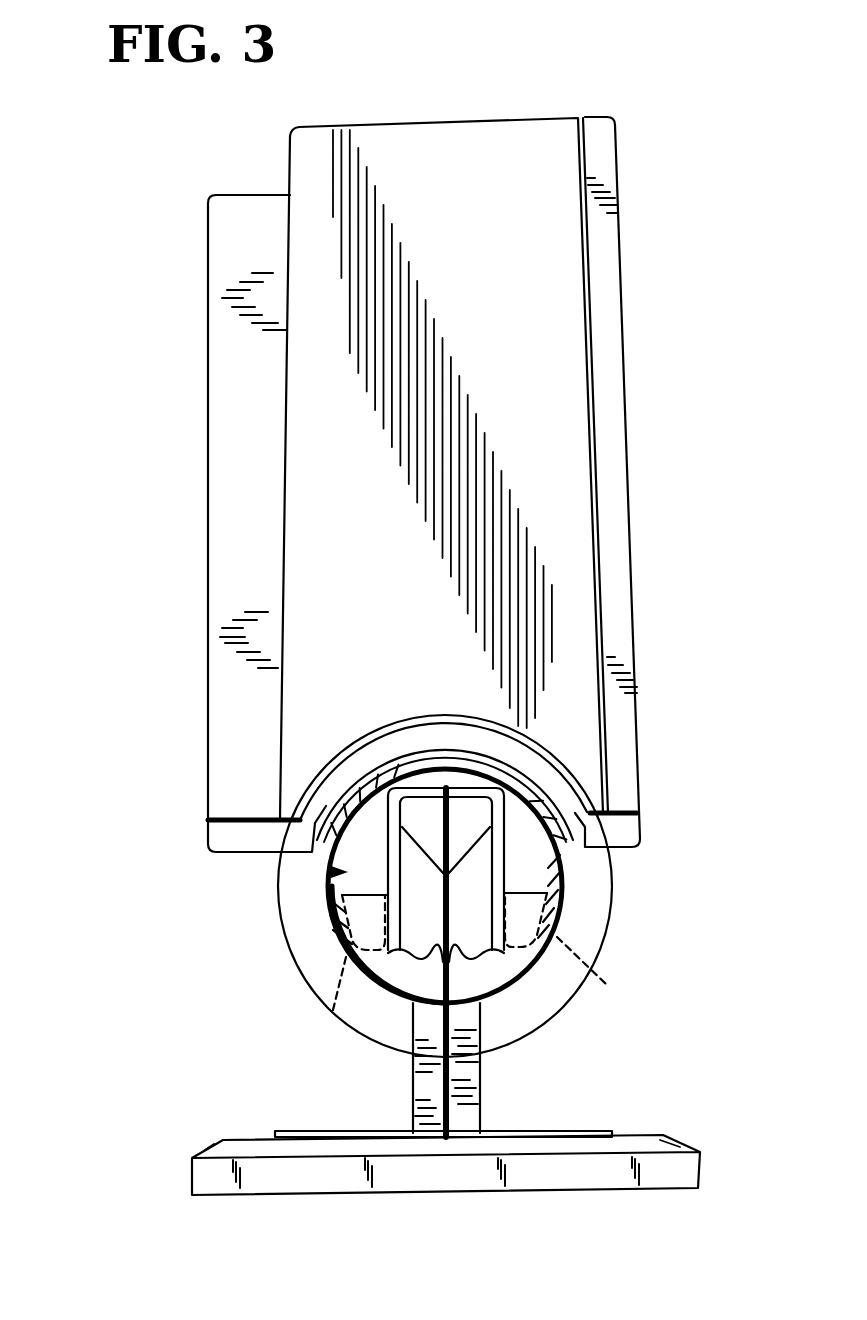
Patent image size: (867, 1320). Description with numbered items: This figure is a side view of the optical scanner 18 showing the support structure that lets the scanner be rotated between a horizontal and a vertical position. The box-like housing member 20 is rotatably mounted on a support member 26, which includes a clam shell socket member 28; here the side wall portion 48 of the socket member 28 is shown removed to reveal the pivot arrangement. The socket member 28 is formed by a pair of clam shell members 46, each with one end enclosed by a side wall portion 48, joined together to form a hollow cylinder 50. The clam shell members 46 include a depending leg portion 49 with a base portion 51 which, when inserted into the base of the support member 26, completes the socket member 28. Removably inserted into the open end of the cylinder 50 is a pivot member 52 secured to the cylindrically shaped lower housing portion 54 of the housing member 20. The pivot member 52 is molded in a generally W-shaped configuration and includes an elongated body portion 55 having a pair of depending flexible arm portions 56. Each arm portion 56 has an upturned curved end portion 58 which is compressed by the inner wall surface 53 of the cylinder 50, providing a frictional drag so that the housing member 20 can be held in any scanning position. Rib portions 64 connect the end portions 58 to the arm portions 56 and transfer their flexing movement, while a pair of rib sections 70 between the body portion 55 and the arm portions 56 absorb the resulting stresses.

The optical scanner 18 is at (152, 407).
The housing member 20 is at (443, 120).
The support member 26 is at (306, 1213).
The socket member 28 is at (530, 977).
The clam shell members 46 is at (350, 920).
The side wall portion 48 is at (403, 973).
The depending leg portion 49 is at (412, 1090).
The hollow cylinder 50 is at (565, 885).
The base portion 51 is at (275, 1131).
The pivot member 52 is at (395, 763).
The inner wall surface 53 is at (340, 872).
The lower housing portion 54 is at (607, 933).
The elongated body portion 55 is at (500, 780).
The flexible arm portions 56 is at (390, 850).
The upturned curved end portion 58 is at (466, 988).
The rib portions 64 is at (332, 937).
The rib sections 70 is at (427, 815).